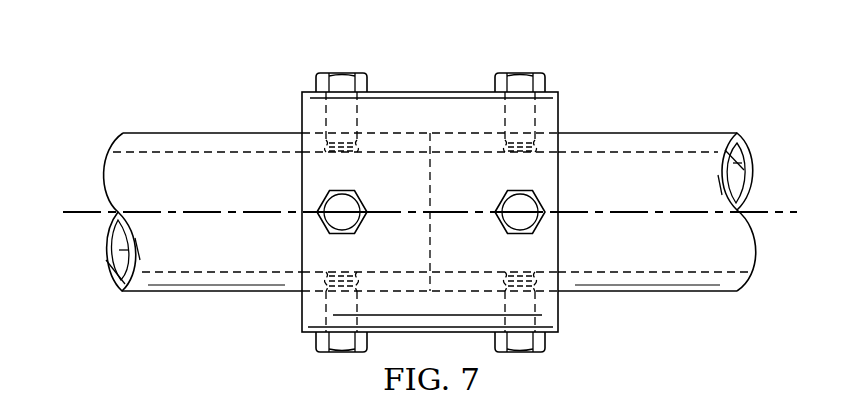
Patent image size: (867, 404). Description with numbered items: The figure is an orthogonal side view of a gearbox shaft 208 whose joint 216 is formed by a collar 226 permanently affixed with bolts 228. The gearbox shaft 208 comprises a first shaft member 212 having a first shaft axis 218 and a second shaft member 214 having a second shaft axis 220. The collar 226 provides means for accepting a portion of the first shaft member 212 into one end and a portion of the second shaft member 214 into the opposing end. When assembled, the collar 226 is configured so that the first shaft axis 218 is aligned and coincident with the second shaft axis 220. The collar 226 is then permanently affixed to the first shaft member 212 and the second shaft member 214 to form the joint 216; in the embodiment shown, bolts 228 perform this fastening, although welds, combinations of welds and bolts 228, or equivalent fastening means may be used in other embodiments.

The gearbox shaft 208 is at (197, 55).
The first shaft member 212 is at (172, 133).
The second shaft member 214 is at (687, 133).
The joint 216 is at (432, 240).
The first shaft axis 218 is at (82, 210).
The second shaft axis 220 is at (777, 210).
The collar 226 is at (440, 89).
The bolts 228 is at (317, 80).